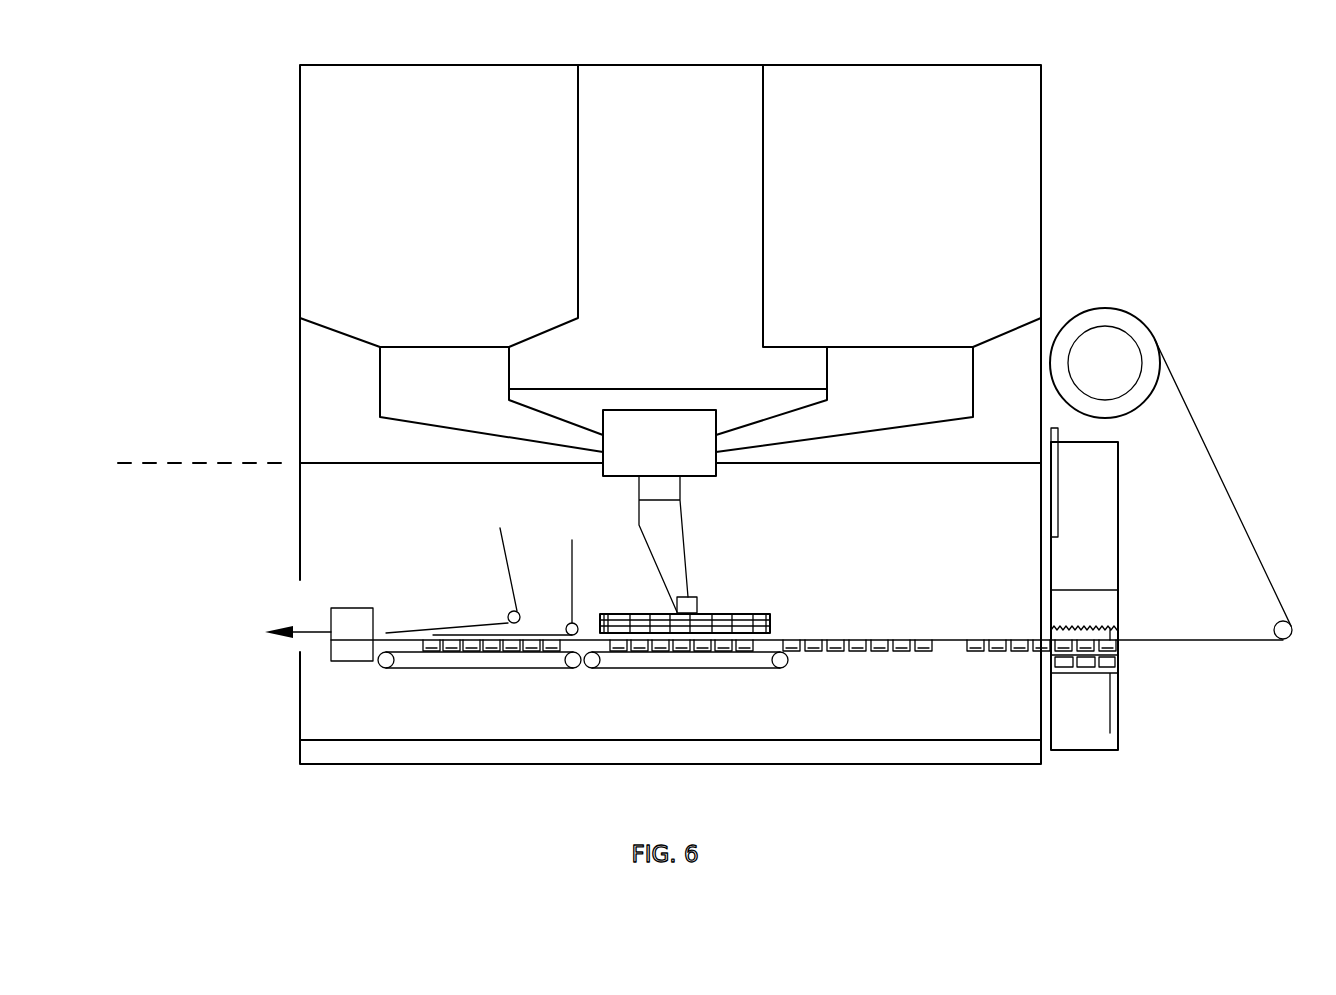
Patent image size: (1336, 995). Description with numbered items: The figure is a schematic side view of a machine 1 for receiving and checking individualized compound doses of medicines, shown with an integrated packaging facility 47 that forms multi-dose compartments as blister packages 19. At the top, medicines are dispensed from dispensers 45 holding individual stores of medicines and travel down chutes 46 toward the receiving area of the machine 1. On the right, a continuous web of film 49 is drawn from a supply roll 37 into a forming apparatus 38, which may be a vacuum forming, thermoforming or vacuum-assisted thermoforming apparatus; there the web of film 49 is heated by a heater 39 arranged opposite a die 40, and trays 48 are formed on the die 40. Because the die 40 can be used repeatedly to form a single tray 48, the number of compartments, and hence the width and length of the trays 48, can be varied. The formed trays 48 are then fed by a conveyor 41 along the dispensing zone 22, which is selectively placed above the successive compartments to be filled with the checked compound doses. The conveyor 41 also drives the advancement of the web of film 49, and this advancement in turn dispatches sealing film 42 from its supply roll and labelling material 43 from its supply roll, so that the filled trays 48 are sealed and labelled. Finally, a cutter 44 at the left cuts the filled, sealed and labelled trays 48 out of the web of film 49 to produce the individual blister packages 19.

The machine 1 is at (659, 398).
The blister package 19 is at (541, 648).
The dispensing zone 22 is at (691, 613).
The supply roll 37 is at (1105, 308).
The forming apparatus 38 is at (1148, 604).
The heater 39 is at (1130, 621).
The die 40 is at (1130, 660).
The conveyor 41 is at (722, 668).
The sealing film 42 is at (540, 531).
The labelling material 43 is at (465, 523).
The cutter 44 is at (350, 608).
The dispenser 45 is at (432, 208).
The chute 46 is at (512, 433).
The packaging facility 47 is at (606, 685).
The tray 48 is at (977, 651).
The web of film 49 is at (1225, 483).